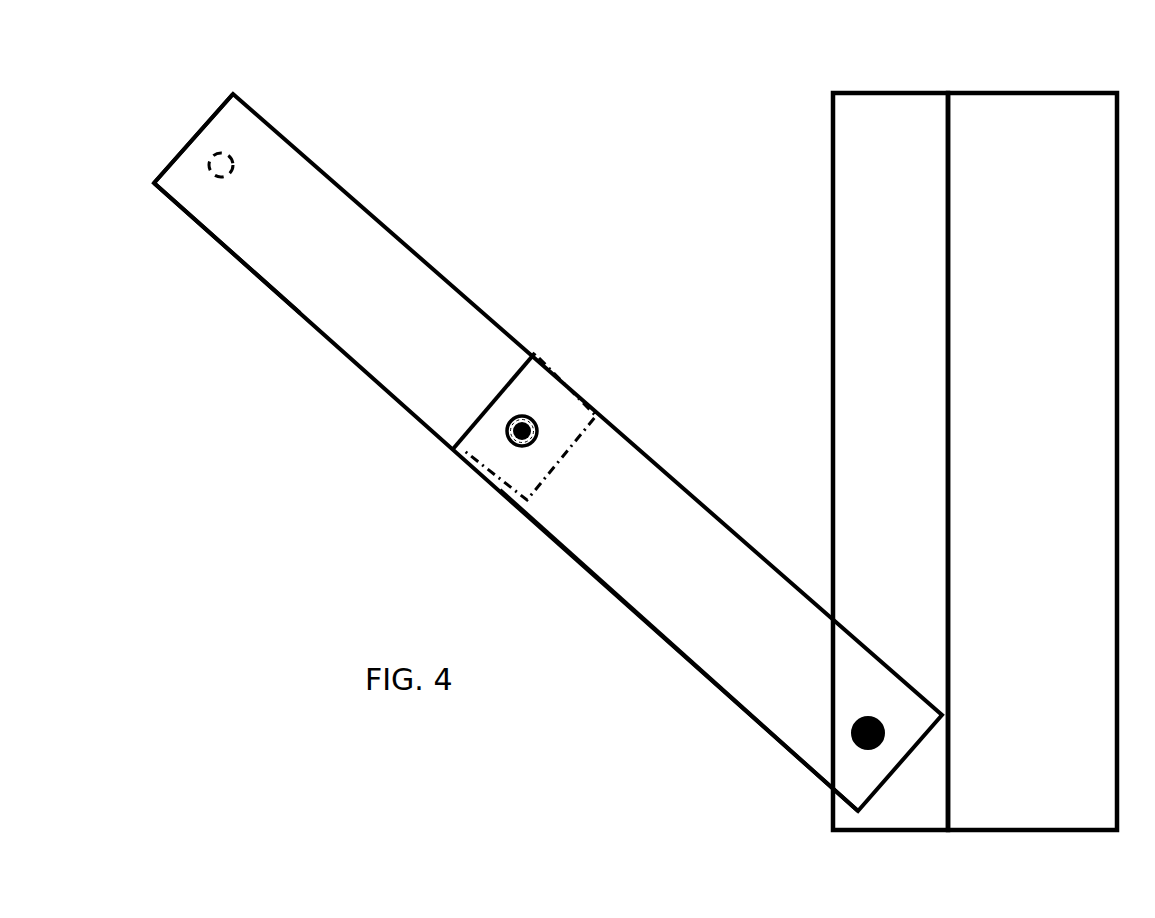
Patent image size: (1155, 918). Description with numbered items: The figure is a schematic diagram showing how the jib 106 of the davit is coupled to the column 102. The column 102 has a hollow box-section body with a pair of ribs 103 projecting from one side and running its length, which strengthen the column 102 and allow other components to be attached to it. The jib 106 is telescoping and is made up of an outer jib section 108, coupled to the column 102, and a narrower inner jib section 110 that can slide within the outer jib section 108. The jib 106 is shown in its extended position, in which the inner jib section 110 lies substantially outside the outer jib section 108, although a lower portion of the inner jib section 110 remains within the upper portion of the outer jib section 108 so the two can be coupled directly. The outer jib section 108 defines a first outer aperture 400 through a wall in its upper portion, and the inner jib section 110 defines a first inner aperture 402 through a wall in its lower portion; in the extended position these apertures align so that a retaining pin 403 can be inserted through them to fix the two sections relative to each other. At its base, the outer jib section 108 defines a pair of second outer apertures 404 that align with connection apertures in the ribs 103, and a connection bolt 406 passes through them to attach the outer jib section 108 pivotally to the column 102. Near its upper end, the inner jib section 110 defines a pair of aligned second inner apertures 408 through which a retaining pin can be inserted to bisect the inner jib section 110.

The column 102 is at (985, 110).
The ribs 103 is at (872, 108).
The jib 106 is at (312, 414).
The outer jib section 108 is at (563, 557).
The inner jib section 110 is at (263, 280).
The first outer aperture 400 is at (537, 427).
The first inner aperture 402 is at (530, 420).
The retaining pin 403 is at (507, 438).
The second outer apertures 404 is at (853, 728).
The connection bolt 406 is at (853, 738).
The second inner apertures 408 is at (226, 154).